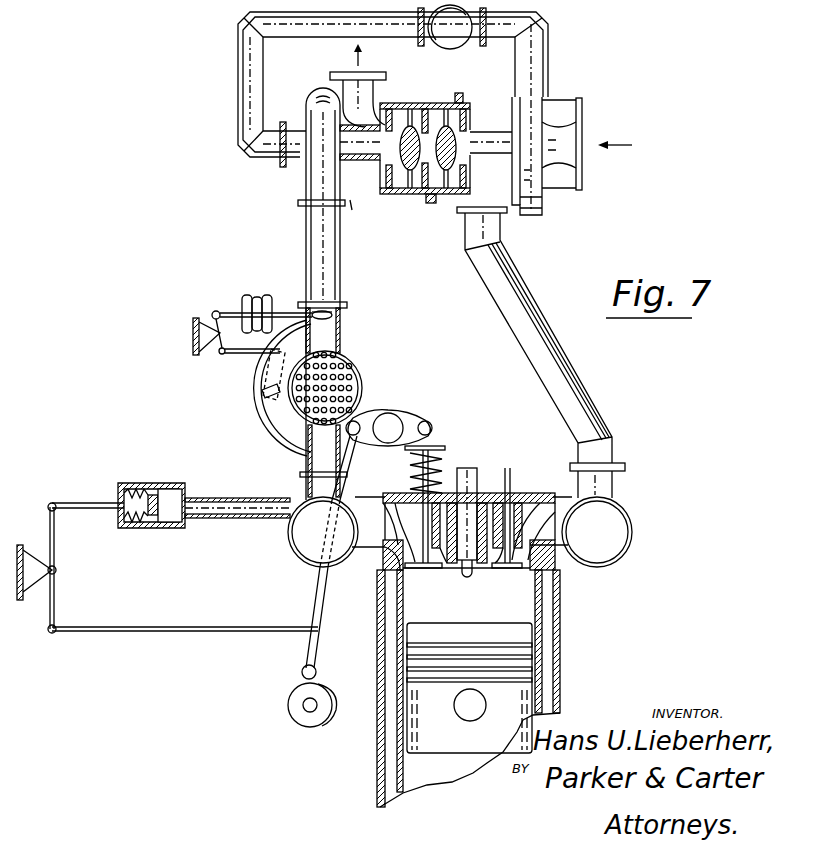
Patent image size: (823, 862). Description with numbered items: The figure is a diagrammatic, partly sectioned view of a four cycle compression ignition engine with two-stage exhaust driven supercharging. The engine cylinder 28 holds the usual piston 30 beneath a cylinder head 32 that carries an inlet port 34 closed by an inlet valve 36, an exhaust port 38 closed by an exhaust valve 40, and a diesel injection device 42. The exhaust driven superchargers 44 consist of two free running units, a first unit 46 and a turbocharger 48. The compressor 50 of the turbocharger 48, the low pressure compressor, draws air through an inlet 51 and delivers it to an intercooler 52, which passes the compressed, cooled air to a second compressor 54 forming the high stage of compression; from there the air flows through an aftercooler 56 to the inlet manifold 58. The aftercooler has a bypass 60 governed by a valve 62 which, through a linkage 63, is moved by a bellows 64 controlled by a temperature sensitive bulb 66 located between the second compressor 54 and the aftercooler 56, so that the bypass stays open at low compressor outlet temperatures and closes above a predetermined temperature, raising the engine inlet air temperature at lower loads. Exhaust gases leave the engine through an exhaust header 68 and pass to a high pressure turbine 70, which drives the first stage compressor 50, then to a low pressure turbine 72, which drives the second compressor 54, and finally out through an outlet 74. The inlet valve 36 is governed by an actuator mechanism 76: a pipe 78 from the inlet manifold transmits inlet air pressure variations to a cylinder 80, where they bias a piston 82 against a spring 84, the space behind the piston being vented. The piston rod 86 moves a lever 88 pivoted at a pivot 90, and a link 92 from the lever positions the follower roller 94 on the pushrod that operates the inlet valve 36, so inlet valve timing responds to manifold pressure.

The cylinder 28 is at (561, 679).
The piston 30 is at (515, 635).
The cylinder head 32 is at (487, 493).
The inlet port 34 is at (393, 532).
The inlet valve 36 is at (416, 570).
The exhaust port 38 is at (532, 528).
The exhaust valve 40 is at (524, 570).
The diesel injection device 42 is at (467, 470).
The exhaust driven superchargers 44 is at (410, 202).
The free running unit 46 is at (352, 206).
The turbocharger 48 is at (513, 223).
The compressor 50 is at (530, 128).
The inlet 51 is at (585, 133).
The intercooler 52 is at (458, 48).
The second compressor 54 is at (300, 175).
The aftercooler 56 is at (362, 380).
The inlet manifold 58 is at (305, 566).
The bypass 60 is at (282, 432).
The valve 62 is at (262, 397).
The linkage 63 is at (218, 354).
The bellows 64 is at (256, 296).
The temperature sensitive bulb 66 is at (340, 320).
The exhaust header 68 is at (634, 546).
The high pressure turbine 70 is at (431, 204).
The low pressure turbine 72 is at (403, 112).
The outlet 74 is at (364, 72).
The actuator mechanism 76 is at (164, 484).
The pipe 78 is at (236, 521).
The cylinder 80 is at (170, 530).
The piston 82 is at (158, 518).
The spring 84 is at (134, 486).
The piston rod 86 is at (82, 502).
The lever 88 is at (54, 556).
The pivot 90 is at (56, 571).
The link 92 is at (125, 633).
The follower roller 94 is at (302, 671).